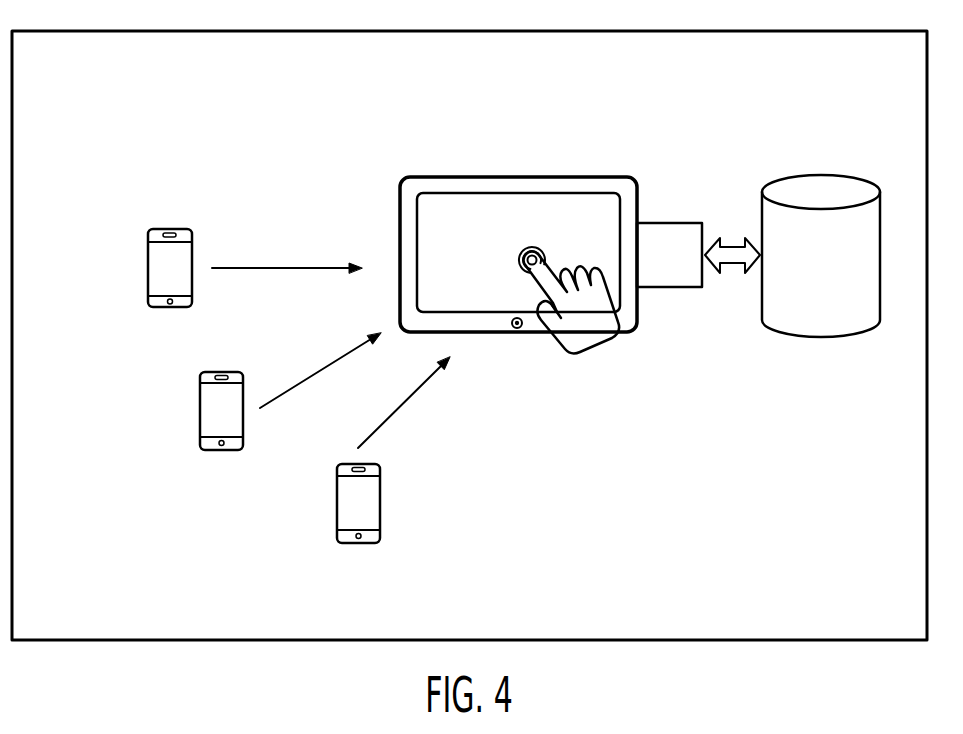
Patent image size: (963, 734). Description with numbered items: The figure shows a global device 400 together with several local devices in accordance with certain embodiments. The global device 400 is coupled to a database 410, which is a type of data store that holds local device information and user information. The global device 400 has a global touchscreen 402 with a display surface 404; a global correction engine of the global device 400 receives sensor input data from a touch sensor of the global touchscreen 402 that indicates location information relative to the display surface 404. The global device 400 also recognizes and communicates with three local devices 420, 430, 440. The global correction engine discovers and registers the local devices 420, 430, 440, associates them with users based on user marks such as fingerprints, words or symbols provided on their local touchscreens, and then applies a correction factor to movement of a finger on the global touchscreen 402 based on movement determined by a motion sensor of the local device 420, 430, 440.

The global device 400 is at (440, 177).
The global touchscreen 402 is at (483, 223).
The display surface 404 is at (532, 247).
The database 410 is at (821, 174).
The local device 420 is at (148, 269).
The local device 430 is at (200, 410).
The local device 440 is at (337, 504).